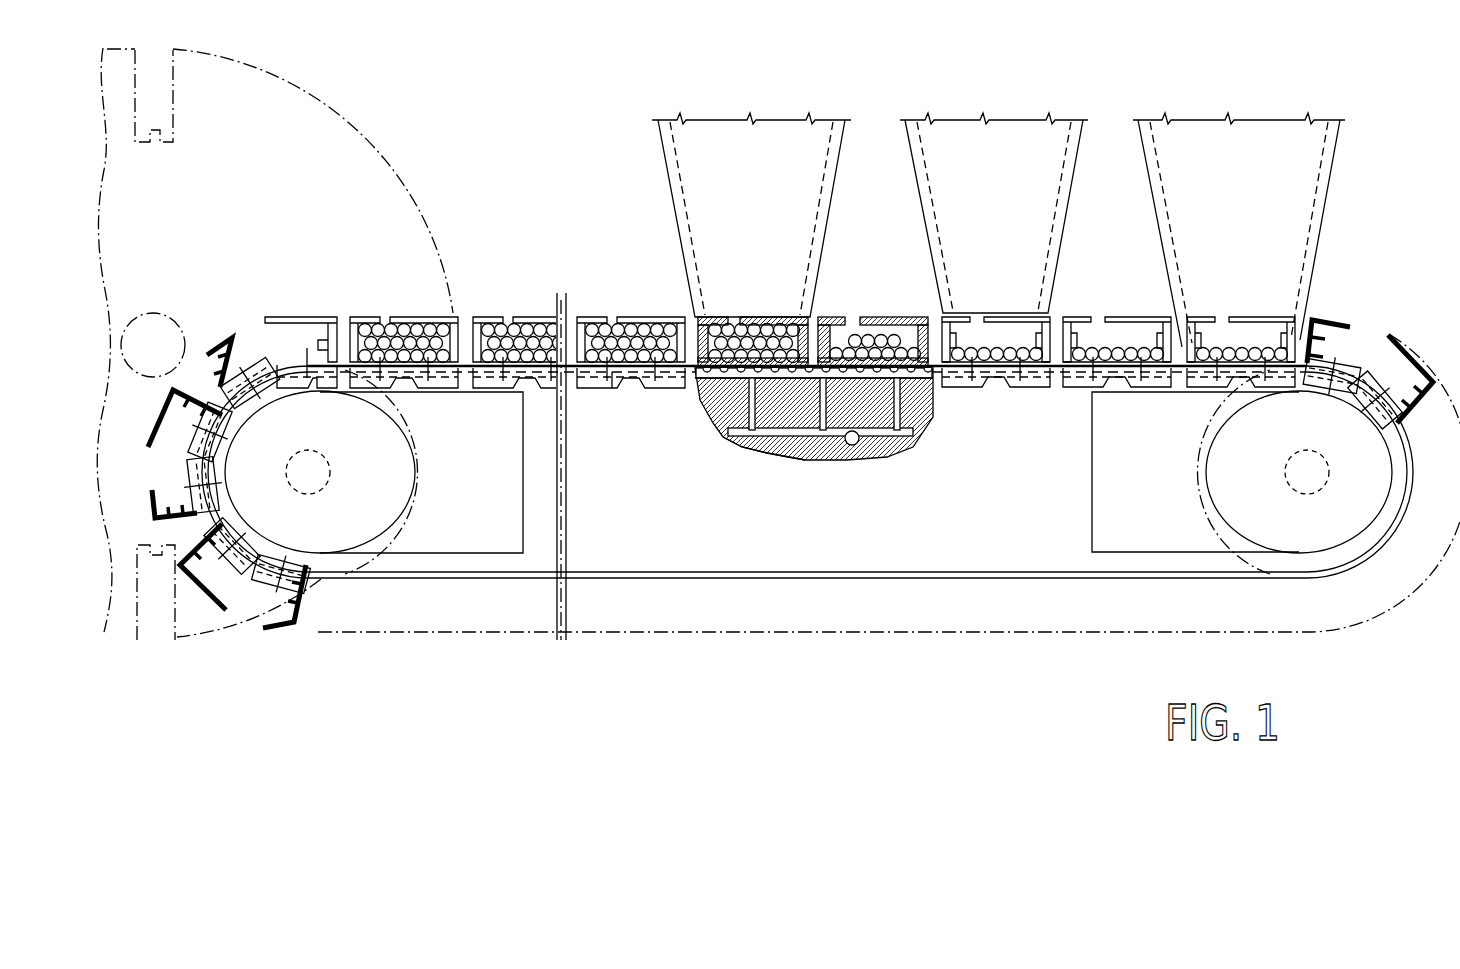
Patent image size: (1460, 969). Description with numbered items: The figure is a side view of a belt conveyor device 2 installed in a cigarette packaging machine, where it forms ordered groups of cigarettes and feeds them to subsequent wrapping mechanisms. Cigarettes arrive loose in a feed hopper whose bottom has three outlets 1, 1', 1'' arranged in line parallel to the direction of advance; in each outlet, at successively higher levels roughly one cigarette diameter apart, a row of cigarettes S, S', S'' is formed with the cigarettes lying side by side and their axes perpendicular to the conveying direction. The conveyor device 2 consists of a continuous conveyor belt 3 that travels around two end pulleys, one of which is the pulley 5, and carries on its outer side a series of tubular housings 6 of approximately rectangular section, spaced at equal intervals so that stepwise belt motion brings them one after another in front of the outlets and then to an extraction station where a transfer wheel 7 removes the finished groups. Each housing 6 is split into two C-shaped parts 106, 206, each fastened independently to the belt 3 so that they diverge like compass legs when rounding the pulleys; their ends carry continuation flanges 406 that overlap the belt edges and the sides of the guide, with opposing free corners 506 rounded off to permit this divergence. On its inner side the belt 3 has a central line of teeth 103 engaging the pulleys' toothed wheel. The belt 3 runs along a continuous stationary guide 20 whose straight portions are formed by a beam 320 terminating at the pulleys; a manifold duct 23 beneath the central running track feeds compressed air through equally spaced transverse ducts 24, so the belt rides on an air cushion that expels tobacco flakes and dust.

The outlet 1 is at (1244, 230).
The outlet 1' is at (1009, 213).
The outlet 1'' is at (764, 215).
The belt conveyor device 2 is at (612, 316).
The conveyor belt 3 is at (936, 386).
The pulley 5 is at (407, 500).
The tubular housing 6 is at (461, 314).
The wheel 7 is at (332, 104).
The stationary guide 20 is at (750, 582).
The manifold duct 23 is at (873, 440).
The transverse duct 24 is at (828, 412).
The central line of teeth 103 is at (760, 380).
The C-shaped part 106 is at (357, 313).
The C-shaped part 206 is at (410, 318).
The beam 320 is at (1030, 555).
The continuation flange 406 is at (398, 382).
The free corner 506 is at (612, 380).
The row of cigarettes S is at (1034, 391).
The row of cigarettes S' is at (810, 300).
The row of cigarettes S'' is at (579, 304).